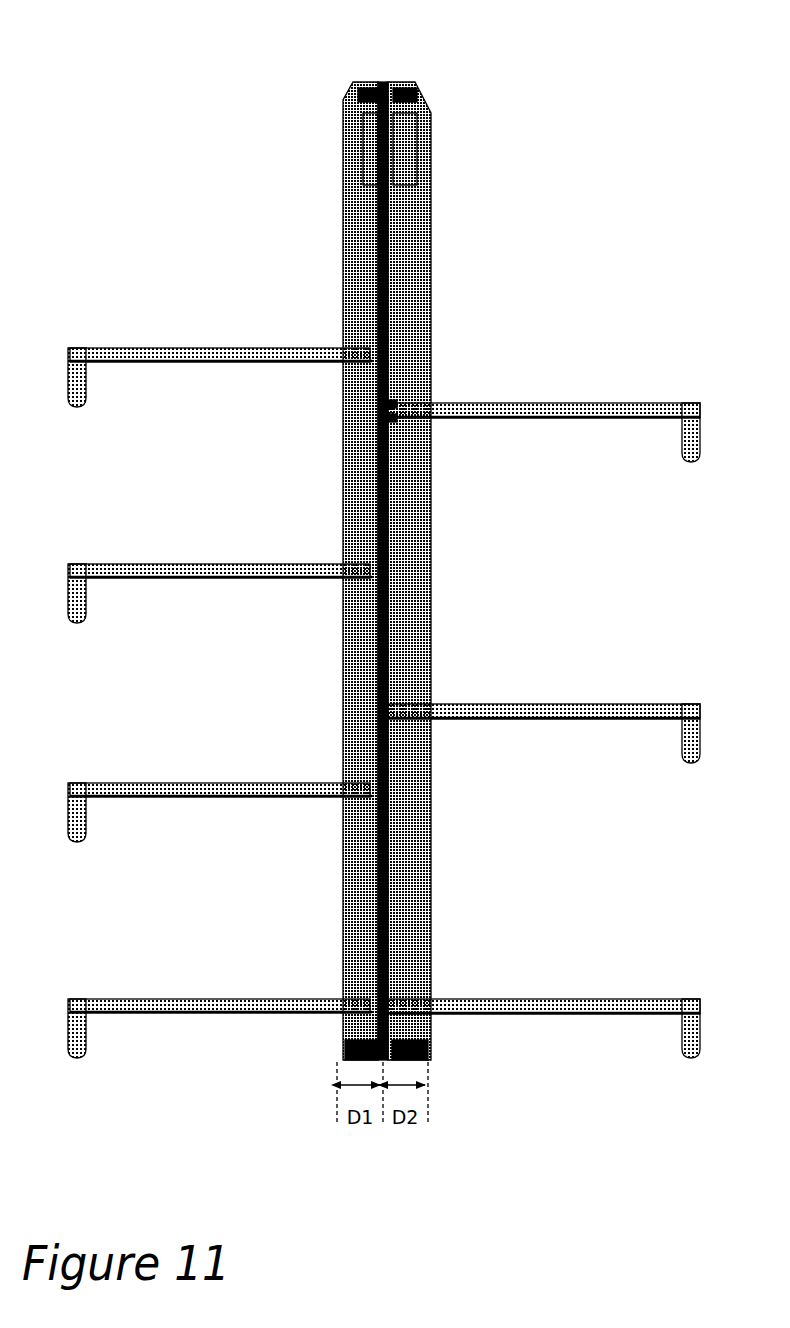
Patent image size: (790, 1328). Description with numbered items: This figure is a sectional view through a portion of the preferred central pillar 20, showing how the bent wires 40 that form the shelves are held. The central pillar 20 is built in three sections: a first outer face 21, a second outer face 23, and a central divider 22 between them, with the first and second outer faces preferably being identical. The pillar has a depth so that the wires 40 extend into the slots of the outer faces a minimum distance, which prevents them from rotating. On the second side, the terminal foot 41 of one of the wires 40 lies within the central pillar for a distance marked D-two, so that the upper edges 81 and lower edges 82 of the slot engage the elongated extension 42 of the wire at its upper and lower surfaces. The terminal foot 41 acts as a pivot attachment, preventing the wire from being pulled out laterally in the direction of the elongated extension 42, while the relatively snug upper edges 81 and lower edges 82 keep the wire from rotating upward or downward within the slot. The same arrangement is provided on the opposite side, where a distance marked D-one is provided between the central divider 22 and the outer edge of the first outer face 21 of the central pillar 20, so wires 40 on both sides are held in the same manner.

The central pillar 20 is at (414, 530).
The first outer face 21 is at (341, 113).
The central divider 22 is at (383, 90).
The second outer face 23 is at (431, 114).
The wires 40 is at (384, 647).
The terminal foot 41 is at (425, 365).
The elongated extension 42 is at (597, 403).
The upper edges 81 is at (428, 392).
The lower edges 82 is at (428, 422).